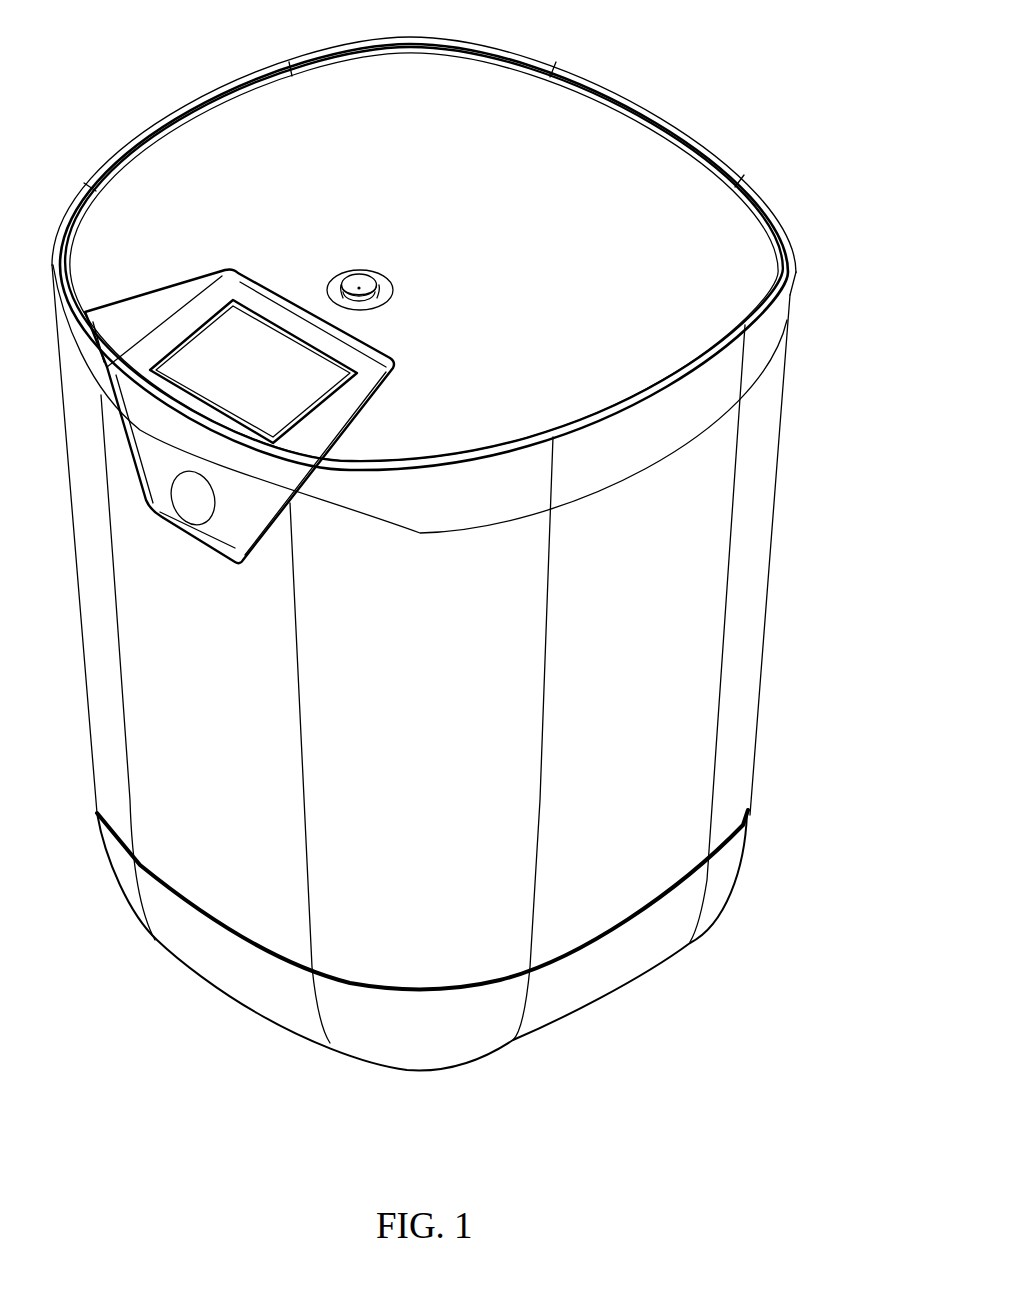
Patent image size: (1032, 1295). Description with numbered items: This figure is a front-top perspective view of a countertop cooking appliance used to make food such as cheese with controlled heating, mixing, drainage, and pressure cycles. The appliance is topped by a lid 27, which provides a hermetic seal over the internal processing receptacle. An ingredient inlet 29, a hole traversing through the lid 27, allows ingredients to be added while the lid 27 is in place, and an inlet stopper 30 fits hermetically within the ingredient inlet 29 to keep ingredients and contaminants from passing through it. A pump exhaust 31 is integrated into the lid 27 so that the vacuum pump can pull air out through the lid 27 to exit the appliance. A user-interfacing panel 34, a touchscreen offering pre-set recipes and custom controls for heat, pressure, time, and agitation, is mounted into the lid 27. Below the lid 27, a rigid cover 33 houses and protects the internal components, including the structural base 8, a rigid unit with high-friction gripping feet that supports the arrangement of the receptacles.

The structural base 8 is at (197, 953).
The lid 27 is at (438, 160).
The ingredient inlet 29 is at (390, 290).
The inlet stopper 30 is at (343, 281).
The pump exhaust 31 is at (625, 133).
The cover 33 is at (438, 713).
The user-interfacing panel 34 is at (217, 345).